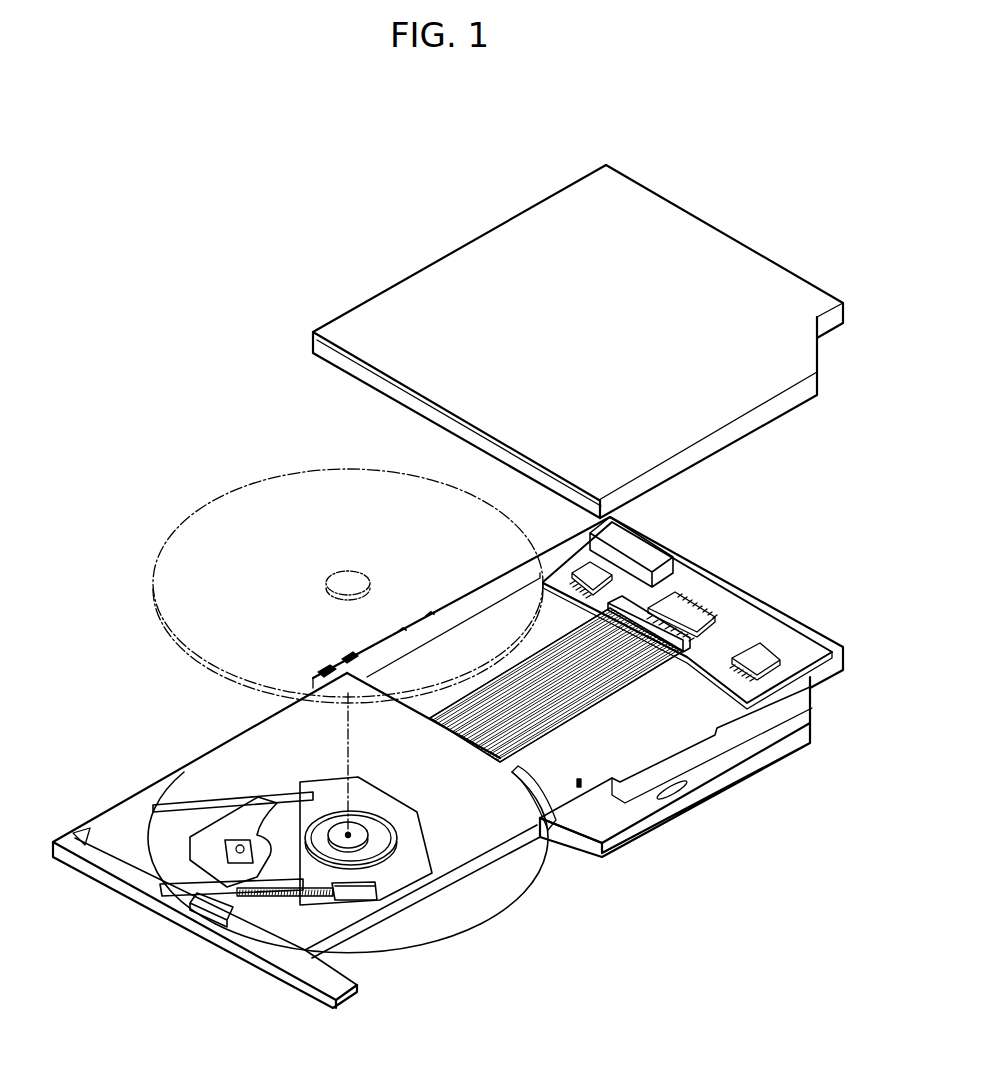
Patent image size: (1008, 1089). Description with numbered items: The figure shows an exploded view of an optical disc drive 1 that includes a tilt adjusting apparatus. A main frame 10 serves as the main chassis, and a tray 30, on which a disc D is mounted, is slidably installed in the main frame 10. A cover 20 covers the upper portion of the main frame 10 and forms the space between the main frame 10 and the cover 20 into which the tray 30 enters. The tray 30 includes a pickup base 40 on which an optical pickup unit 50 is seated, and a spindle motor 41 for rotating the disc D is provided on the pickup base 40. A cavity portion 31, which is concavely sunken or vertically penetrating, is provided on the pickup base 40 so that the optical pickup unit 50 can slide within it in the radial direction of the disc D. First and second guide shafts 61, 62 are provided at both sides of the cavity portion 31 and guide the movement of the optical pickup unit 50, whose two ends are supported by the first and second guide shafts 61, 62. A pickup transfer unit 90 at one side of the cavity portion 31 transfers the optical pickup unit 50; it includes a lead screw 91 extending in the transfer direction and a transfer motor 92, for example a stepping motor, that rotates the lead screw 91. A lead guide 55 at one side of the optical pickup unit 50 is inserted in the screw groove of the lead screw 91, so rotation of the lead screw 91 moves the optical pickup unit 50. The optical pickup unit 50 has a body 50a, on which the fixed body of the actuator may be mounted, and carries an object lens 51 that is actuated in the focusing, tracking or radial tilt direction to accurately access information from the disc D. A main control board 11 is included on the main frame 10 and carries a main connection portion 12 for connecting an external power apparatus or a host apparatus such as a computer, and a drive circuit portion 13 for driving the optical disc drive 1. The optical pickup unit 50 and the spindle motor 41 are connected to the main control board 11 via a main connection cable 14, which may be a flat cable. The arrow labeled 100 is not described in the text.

The optical disc drive 1 is at (196, 306).
The main frame 10 is at (725, 788).
The main control board 11 is at (687, 601).
The main connection portion 12 is at (647, 548).
The drive circuit portion 13 is at (767, 648).
The main connection cable 14 is at (643, 677).
The cover 20 is at (413, 290).
The tray 30 is at (260, 968).
The cavity portion 31 is at (288, 851).
The pickup base 40 is at (403, 815).
The spindle motor 41 is at (363, 830).
The optical pickup unit 50 is at (195, 856).
The body 50a is at (230, 822).
The object lens 51 is at (245, 840).
The lead guide 55 is at (267, 900).
The first guide shaft 61 is at (163, 883).
The second guide shaft 62 is at (180, 800).
The pickup transfer unit 90 is at (342, 935).
The lead screw 91 is at (310, 892).
The transfer motor 92 is at (388, 912).
The optical pickup unit 100 is at (402, 868).
The disc D is at (198, 522).